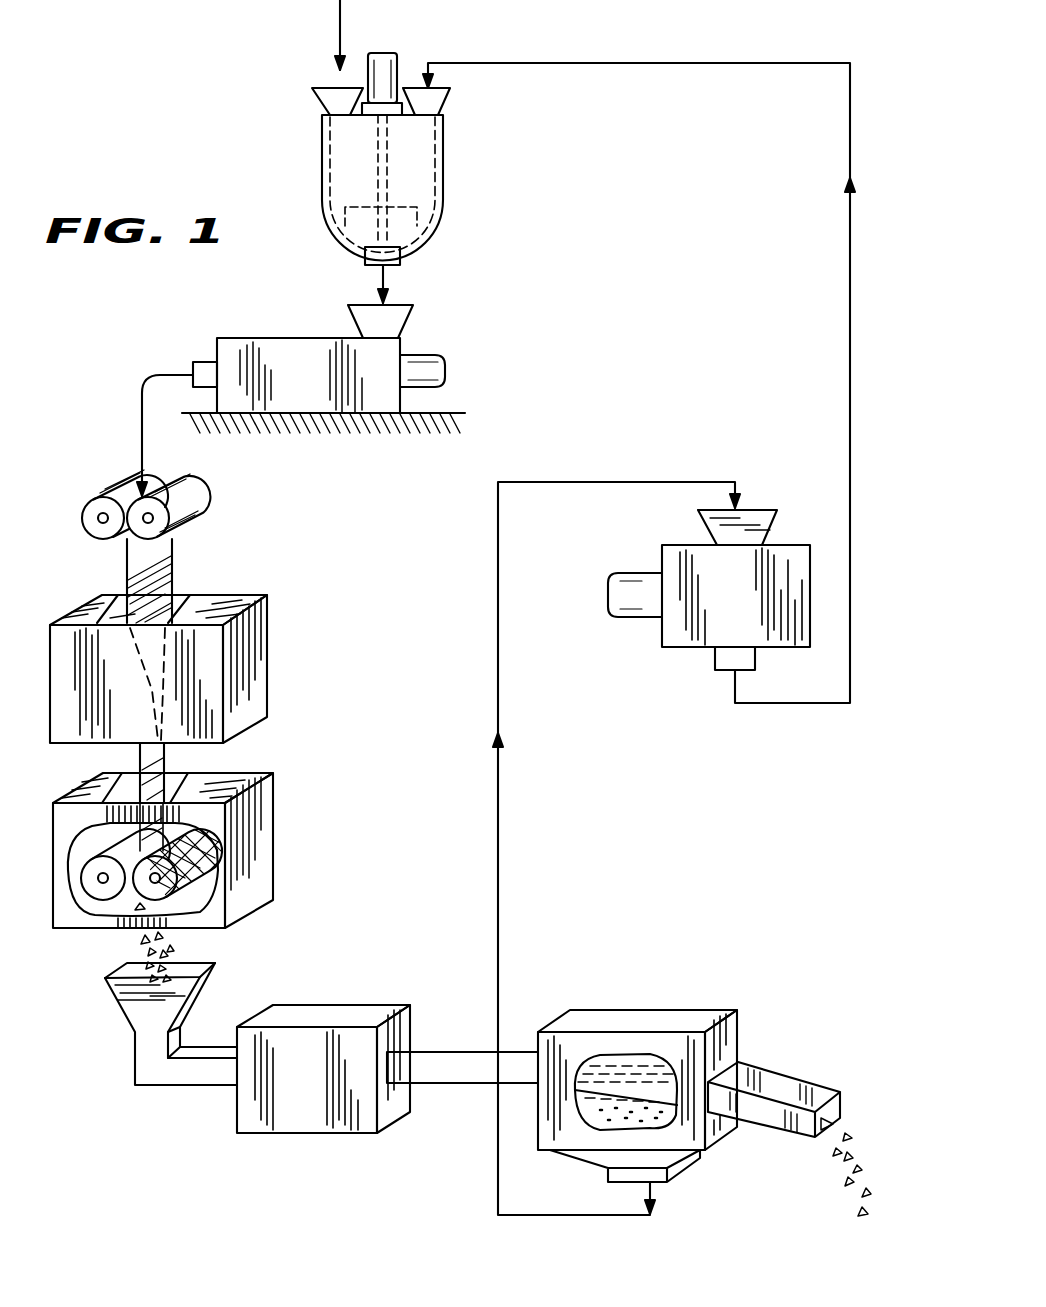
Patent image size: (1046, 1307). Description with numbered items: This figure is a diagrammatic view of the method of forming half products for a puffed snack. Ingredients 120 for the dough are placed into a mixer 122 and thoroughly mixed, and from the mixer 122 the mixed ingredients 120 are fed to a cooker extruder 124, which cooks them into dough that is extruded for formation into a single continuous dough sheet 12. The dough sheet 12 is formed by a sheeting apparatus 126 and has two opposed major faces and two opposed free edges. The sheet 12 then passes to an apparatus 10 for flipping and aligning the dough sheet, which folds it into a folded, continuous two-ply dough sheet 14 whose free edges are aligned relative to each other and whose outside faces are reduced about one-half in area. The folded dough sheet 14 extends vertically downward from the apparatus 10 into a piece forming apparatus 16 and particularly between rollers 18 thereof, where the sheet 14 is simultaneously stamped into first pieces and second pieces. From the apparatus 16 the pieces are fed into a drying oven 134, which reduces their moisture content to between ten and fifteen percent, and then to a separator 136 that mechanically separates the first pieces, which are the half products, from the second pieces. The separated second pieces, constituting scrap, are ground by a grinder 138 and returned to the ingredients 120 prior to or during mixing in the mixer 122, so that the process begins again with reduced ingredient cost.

The apparatus for flipping and aligning a dough sheet 10 is at (290, 657).
The dough sheet 12 is at (172, 565).
The folded dough sheet 14 is at (165, 765).
The piece forming apparatus 16 is at (282, 795).
The rollers 18 is at (195, 856).
The ingredients 120 is at (335, 5).
The mixer 122 is at (443, 185).
The cooker extruder 124 is at (433, 335).
The sheeting apparatus 126 is at (218, 510).
The drying oven 134 is at (352, 1000).
The separator 136 is at (690, 1004).
The grinder 138 is at (790, 545).